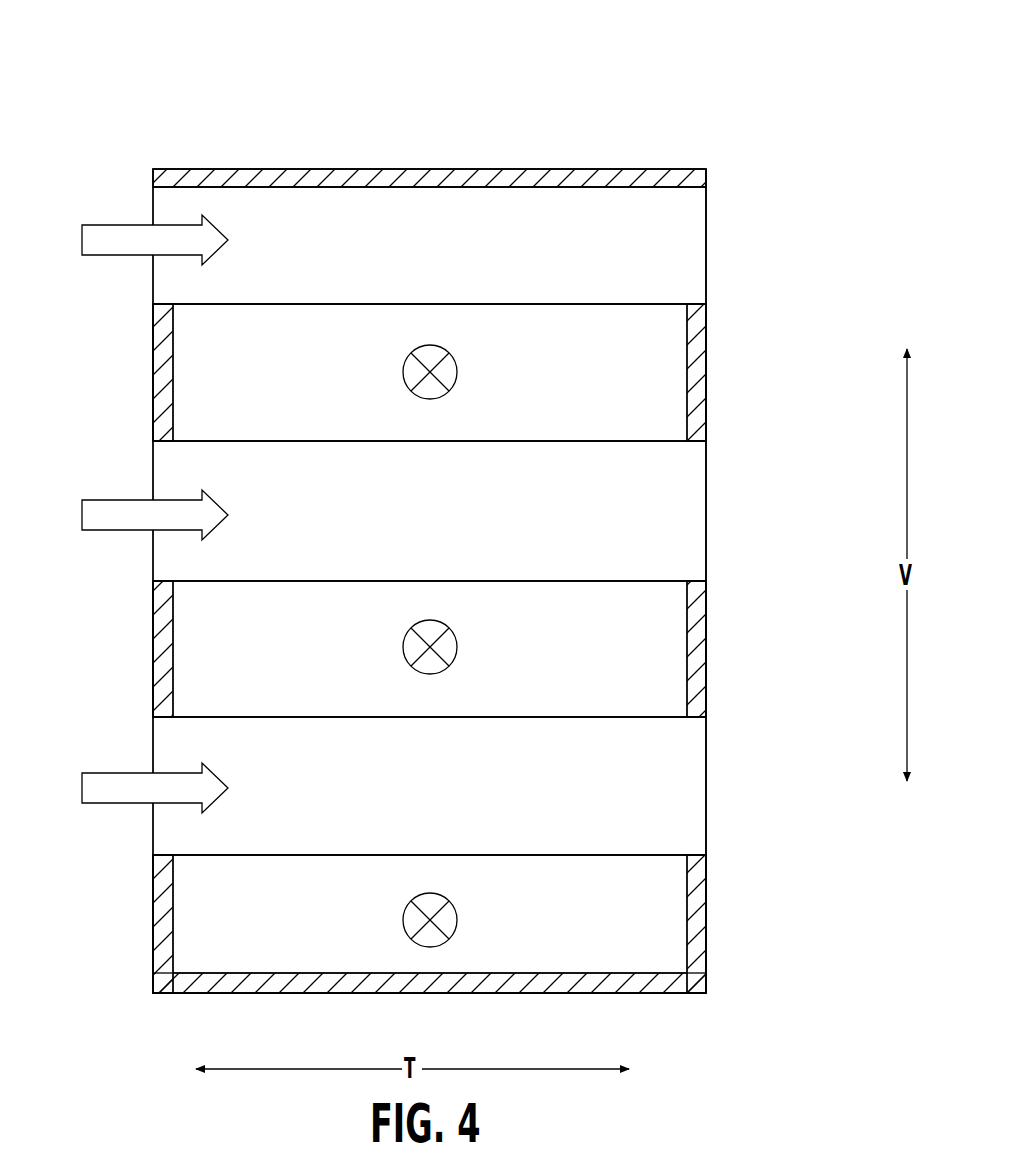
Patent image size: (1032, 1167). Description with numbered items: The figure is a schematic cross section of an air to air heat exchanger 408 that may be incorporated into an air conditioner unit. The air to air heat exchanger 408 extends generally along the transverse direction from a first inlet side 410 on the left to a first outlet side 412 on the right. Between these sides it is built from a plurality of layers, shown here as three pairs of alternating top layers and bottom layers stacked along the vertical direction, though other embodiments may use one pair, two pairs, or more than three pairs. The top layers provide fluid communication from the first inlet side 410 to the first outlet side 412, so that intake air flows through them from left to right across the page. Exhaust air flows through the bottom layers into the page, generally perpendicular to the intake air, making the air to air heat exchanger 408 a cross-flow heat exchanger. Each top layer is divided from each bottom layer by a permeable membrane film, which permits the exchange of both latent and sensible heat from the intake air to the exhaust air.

The air to air heat exchanger 408 is at (135, 95).
The first inlet side 410 is at (147, 900).
The first outlet side 412 is at (710, 846).